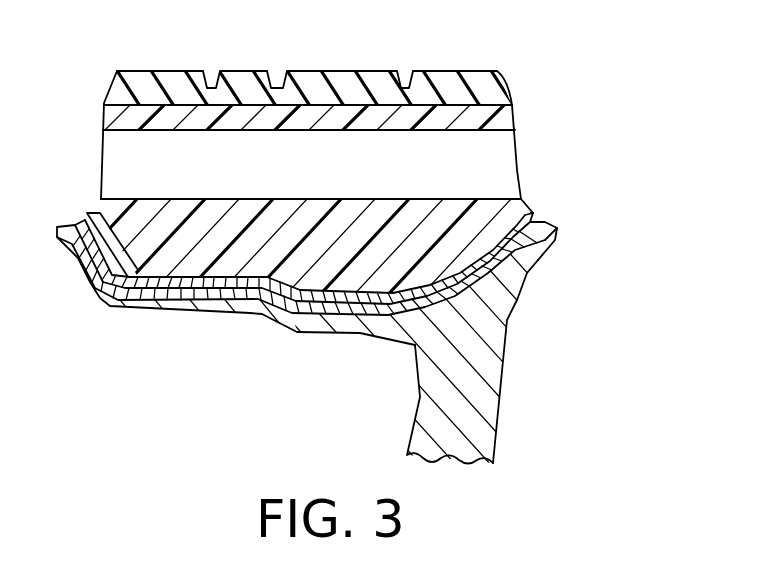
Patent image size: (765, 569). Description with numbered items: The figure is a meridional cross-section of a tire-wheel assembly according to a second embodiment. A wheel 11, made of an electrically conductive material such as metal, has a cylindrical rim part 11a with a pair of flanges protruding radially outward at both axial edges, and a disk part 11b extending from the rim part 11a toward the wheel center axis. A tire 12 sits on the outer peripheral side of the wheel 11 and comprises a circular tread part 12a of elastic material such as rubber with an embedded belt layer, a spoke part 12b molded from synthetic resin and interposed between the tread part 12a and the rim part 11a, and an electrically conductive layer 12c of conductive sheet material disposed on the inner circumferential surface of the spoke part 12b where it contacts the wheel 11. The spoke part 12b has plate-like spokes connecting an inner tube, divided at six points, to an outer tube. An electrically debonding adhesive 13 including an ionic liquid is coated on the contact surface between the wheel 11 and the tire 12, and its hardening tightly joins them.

The wheel 11 is at (500, 417).
The rim part 11a is at (163, 303).
The disk part 11b is at (421, 420).
The tire 12 is at (460, 69).
The tread part 12a is at (497, 90).
The spoke part 12b is at (503, 167).
The electrically conductive layer 12c is at (527, 213).
The electrically debonding adhesive 13 is at (538, 222).